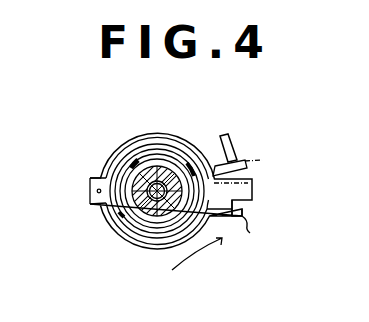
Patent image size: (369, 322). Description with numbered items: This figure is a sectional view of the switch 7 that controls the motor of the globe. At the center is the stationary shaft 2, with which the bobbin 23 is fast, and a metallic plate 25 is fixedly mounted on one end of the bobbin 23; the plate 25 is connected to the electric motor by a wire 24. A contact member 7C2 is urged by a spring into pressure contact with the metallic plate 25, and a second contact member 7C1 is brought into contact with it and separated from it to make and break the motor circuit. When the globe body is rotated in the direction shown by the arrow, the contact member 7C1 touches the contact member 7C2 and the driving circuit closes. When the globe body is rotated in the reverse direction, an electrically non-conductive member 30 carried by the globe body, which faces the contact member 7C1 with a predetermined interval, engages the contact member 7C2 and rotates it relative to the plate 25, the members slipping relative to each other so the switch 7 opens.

The stationary shaft 2 is at (128, 212).
The bobbin 23 is at (163, 168).
The wire 24 is at (98, 190).
The metallic plate 25 is at (91, 188).
The electrically non-conductive member 30 is at (226, 128).
The switch 7 is at (263, 208).
The contact member 7C1 is at (271, 231).
The contact member 7C2 is at (254, 178).